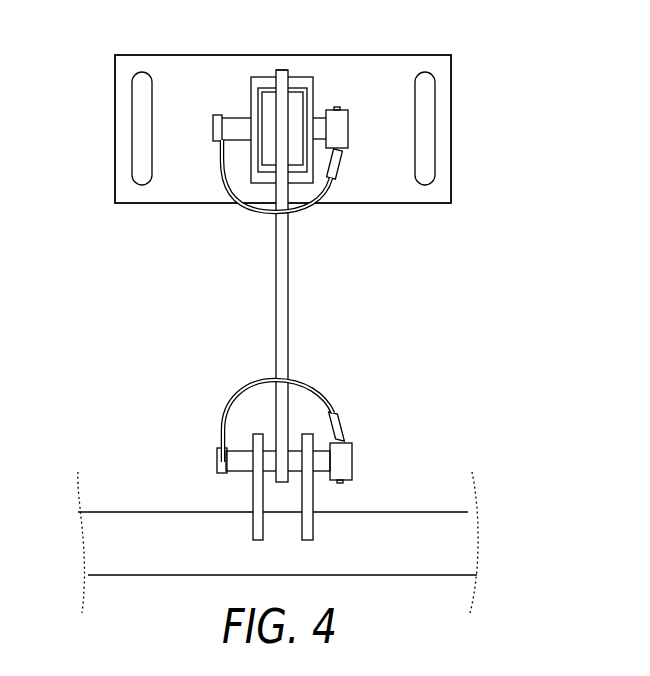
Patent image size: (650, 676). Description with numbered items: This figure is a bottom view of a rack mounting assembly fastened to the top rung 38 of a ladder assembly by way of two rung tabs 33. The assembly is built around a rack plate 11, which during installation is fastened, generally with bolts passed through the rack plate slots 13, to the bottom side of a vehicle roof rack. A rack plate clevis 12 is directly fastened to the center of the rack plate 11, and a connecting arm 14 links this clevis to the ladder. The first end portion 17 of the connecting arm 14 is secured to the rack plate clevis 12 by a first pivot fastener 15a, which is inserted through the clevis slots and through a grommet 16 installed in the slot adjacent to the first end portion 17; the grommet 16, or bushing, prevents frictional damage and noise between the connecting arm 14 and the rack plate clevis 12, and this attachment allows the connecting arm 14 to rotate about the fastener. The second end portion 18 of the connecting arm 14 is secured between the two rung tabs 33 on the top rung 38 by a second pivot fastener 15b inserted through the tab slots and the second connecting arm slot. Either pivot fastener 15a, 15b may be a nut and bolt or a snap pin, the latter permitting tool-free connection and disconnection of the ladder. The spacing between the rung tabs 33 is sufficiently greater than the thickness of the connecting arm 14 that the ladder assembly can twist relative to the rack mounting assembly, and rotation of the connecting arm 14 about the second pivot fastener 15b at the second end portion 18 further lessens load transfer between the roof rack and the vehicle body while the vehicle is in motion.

The rack plate 11 is at (427, 63).
The rack plate clevis 12 is at (253, 174).
The rack plate slots 13 is at (132, 143).
The connecting arm 14 is at (283, 302).
The first pivot fastener 15a is at (338, 135).
The second pivot fastener 15b is at (345, 455).
The grommet 16 is at (268, 158).
The first end portion 17 is at (282, 78).
The second end portion 18 is at (282, 450).
The rung tabs 33 is at (258, 498).
The top rung 38 is at (113, 538).